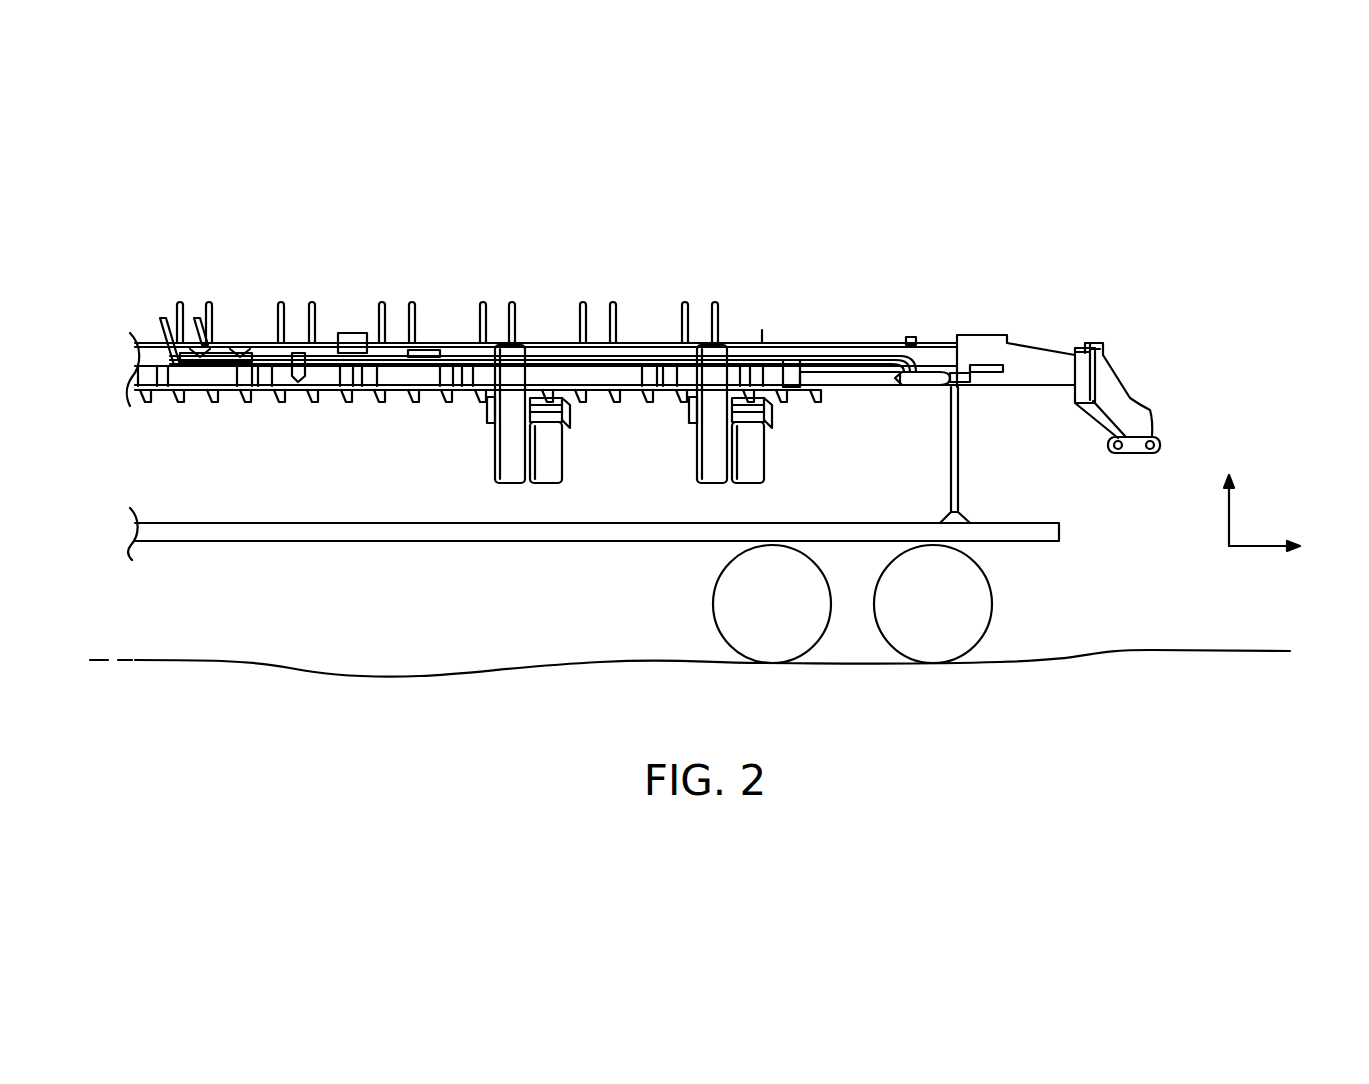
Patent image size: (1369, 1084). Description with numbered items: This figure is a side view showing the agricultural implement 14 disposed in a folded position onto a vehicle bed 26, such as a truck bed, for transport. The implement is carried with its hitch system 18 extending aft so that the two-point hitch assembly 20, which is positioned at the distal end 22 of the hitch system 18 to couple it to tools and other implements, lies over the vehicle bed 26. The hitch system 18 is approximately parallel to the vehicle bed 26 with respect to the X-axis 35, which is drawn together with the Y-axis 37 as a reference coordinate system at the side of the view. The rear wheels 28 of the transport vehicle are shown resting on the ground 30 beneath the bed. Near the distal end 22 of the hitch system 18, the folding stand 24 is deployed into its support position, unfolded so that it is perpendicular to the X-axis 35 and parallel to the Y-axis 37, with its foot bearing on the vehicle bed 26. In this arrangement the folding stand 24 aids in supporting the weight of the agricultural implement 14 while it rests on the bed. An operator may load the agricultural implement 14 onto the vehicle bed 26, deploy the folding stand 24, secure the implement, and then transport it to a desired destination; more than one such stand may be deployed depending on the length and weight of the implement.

The agricultural implement 14 is at (647, 320).
The hitch system 18 is at (1035, 362).
The two-point hitch assembly 20 is at (1135, 393).
The distal end 22 is at (1101, 336).
The folding stand 24 is at (960, 452).
The vehicle bed 26 is at (330, 523).
The rear wheels 28 is at (714, 606).
The ground 30 is at (499, 721).
The X-axis 35 is at (1258, 546).
The Y-axis 37 is at (1229, 515).